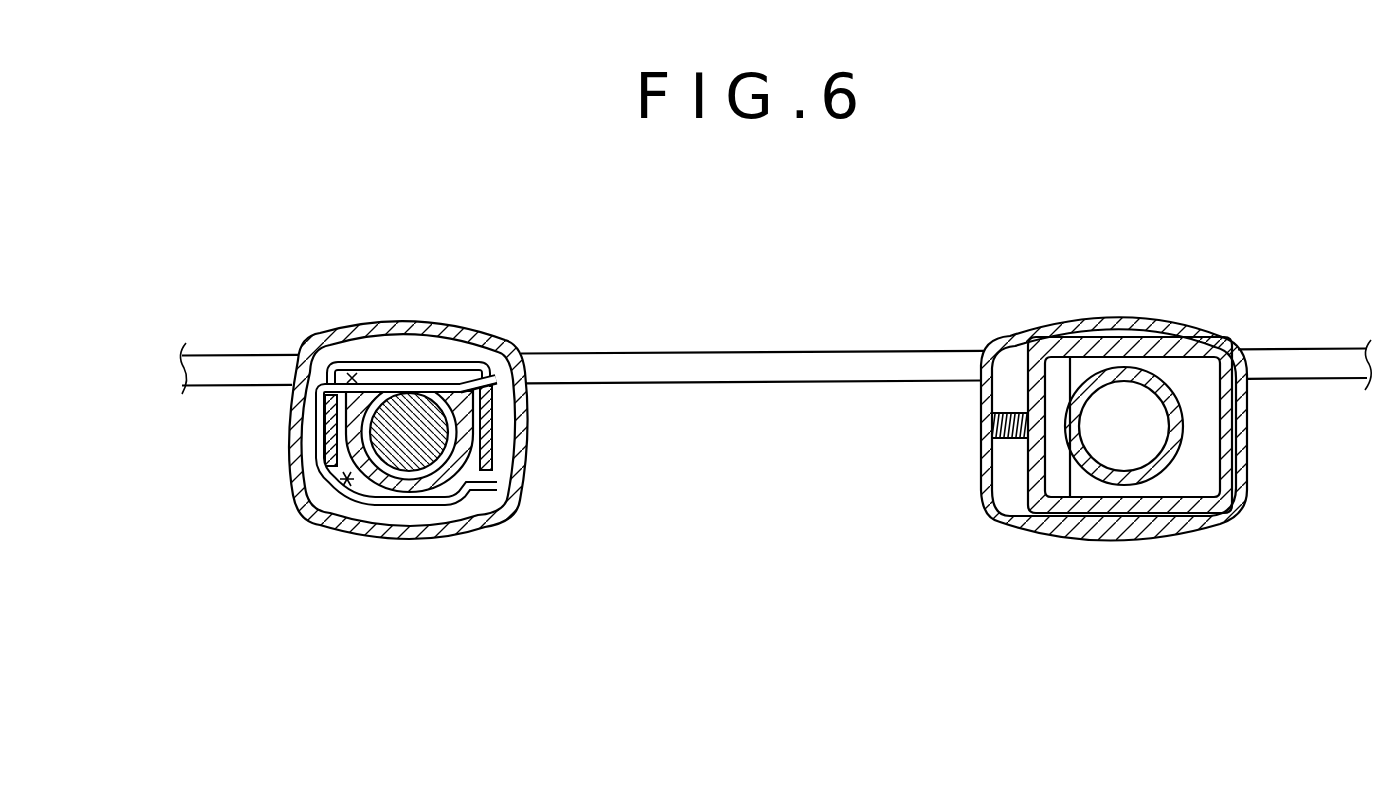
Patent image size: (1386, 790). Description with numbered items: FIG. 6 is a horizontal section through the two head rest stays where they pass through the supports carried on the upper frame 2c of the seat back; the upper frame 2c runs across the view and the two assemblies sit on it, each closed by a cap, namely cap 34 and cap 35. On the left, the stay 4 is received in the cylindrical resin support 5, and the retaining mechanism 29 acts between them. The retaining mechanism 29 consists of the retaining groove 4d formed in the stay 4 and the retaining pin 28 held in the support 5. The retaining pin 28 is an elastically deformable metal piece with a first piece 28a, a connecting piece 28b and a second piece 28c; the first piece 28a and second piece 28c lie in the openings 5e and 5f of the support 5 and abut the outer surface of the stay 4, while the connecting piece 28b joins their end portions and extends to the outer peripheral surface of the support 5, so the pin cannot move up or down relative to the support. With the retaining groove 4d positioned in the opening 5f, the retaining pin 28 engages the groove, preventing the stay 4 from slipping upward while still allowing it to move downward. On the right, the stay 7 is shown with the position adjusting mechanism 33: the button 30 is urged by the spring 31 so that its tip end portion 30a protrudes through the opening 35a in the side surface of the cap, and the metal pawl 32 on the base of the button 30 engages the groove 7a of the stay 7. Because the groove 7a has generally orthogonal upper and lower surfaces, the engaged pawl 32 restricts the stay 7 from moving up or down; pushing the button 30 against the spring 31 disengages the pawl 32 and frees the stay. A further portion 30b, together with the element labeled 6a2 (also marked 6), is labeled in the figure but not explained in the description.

The upper frame 2c is at (736, 366).
The stay 4 is at (460, 412).
The retaining groove 4d is at (453, 394).
The support 5 is at (433, 412).
The opening 5e is at (347, 484).
The opening 5f is at (352, 372).
The leg member 6 is at (539, 524).
The leg portion 6a2 is at (475, 495).
The stay 7 is at (1158, 392).
The groove 7a is at (1075, 428).
The retaining pin 28 is at (361, 422).
The first piece 28a is at (409, 505).
The connecting piece 28b is at (322, 446).
The second piece 28c is at (412, 388).
The retaining mechanism 29 is at (363, 412).
The button 30 is at (1138, 348).
The tip end portion 30a is at (1238, 425).
The block side portion 30b is at (1038, 372).
The spring 31 is at (981, 432).
The pawl 32 is at (1053, 473).
The position adjusting mechanism 33 is at (1093, 420).
The cap 34 is at (325, 332).
The cap 35 is at (1005, 345).
The opening 35a is at (1170, 521).